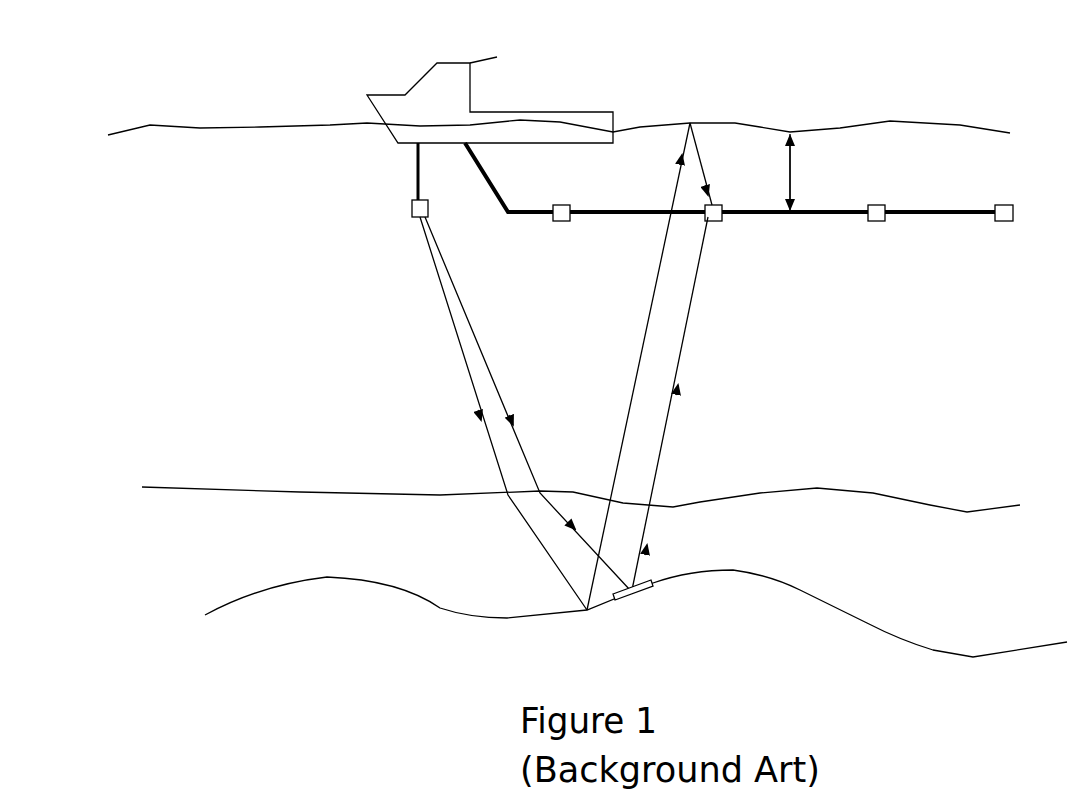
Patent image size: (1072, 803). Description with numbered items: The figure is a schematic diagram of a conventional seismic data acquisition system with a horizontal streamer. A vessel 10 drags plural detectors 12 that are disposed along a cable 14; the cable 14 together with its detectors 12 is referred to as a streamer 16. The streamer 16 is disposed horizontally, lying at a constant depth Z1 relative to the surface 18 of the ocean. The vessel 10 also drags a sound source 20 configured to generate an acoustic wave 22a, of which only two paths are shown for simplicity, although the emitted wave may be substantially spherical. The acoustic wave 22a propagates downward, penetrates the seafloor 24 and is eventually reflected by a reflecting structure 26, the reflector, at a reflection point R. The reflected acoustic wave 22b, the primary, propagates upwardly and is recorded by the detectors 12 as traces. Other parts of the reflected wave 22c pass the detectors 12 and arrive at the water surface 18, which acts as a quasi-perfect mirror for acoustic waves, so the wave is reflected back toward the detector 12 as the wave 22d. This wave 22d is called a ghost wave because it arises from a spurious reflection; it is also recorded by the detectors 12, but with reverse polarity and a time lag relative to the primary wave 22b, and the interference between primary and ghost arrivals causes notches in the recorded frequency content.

The vessel 10 is at (422, 90).
The detectors 12 is at (560, 222).
The cable 14 is at (540, 214).
The streamer 16 is at (739, 242).
The surface of the ocean 18 is at (735, 123).
The sound source 20 is at (408, 203).
The acoustic wave 22a is at (480, 352).
The reflected acoustic wave 22b is at (665, 437).
The reflected wave 22c is at (662, 266).
The ghost wave 22d is at (731, 164).
The constant depth Z1 is at (792, 167).
The seafloor 24 is at (872, 493).
The reflecting structure 26 is at (1003, 652).
The reflection point R is at (628, 590).